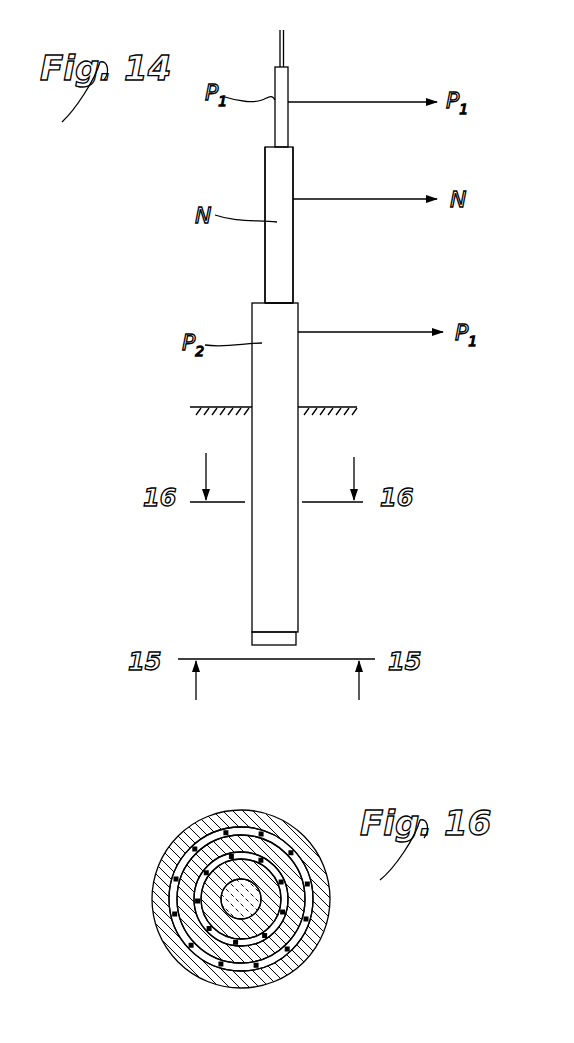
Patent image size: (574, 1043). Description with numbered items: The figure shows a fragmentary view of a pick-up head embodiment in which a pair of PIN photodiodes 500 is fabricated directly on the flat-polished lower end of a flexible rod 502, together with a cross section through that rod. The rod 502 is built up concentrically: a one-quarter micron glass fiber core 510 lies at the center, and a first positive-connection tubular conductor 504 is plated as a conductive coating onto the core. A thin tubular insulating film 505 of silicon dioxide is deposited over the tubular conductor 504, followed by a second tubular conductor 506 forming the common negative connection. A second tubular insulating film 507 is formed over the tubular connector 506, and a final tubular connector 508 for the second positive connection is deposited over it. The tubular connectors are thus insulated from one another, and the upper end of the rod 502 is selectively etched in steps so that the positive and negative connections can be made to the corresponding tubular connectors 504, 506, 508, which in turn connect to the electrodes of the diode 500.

In FIG. 14, the PIN photodiodes 500 is at (285, 646).
In FIG. 14, the rod 502 is at (285, 380).
In FIG. 14, the P1 tubular conductor 504 is at (288, 83).
In FIG. 16, the P1 tubular conductor 504 is at (253, 923).
In FIG. 14, the thin tubular insulating film 505 is at (293, 147).
In FIG. 16, the thin tubular insulating film 505 is at (255, 858).
In FIG. 14, the second tubular conductor 506 is at (292, 230).
In FIG. 16, the second tubular conductor 506 is at (190, 897).
In FIG. 14, the second tubular insulating film 507 is at (295, 305).
In FIG. 16, the second tubular insulating film 507 is at (222, 833).
In FIG. 16, the final tubular connector 508 is at (318, 882).
In FIG. 14, the glass fiber core 510 is at (284, 42).
In FIG. 16, the glass fiber core 510 is at (257, 902).